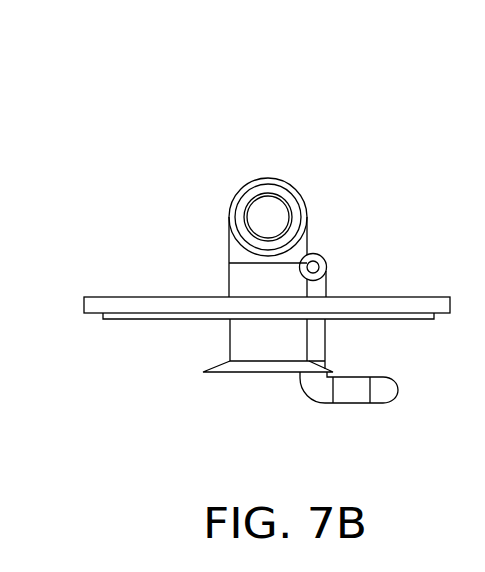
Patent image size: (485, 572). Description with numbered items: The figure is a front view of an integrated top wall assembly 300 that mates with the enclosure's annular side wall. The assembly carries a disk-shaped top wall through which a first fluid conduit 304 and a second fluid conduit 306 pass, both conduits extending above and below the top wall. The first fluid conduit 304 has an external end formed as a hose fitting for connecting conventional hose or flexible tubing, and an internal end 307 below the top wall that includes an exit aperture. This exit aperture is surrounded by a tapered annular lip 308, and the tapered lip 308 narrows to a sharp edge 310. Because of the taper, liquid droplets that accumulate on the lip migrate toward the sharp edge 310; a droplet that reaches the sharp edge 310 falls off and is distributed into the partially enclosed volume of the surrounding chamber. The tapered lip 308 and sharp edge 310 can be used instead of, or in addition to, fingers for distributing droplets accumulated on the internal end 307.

The integrated top wall assembly 300 is at (295, 53).
The first fluid conduit 304 is at (300, 192).
The second fluid conduit 306 is at (326, 278).
The internal end 307 is at (242, 338).
The tapered annular lip 308 is at (270, 368).
The sharp edge 310 is at (203, 372).